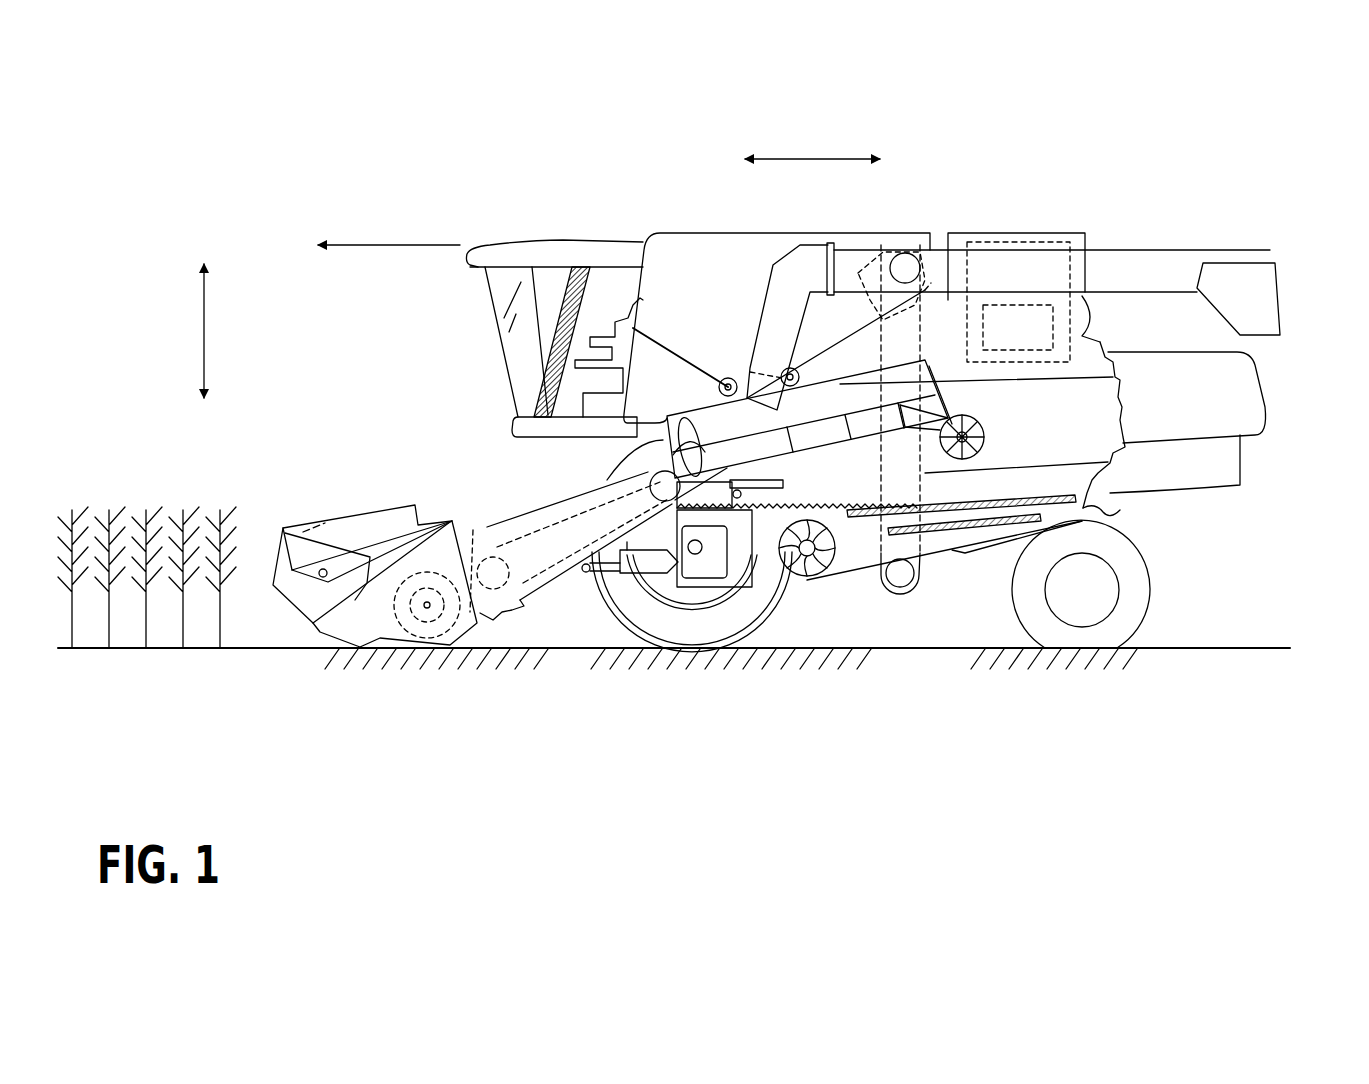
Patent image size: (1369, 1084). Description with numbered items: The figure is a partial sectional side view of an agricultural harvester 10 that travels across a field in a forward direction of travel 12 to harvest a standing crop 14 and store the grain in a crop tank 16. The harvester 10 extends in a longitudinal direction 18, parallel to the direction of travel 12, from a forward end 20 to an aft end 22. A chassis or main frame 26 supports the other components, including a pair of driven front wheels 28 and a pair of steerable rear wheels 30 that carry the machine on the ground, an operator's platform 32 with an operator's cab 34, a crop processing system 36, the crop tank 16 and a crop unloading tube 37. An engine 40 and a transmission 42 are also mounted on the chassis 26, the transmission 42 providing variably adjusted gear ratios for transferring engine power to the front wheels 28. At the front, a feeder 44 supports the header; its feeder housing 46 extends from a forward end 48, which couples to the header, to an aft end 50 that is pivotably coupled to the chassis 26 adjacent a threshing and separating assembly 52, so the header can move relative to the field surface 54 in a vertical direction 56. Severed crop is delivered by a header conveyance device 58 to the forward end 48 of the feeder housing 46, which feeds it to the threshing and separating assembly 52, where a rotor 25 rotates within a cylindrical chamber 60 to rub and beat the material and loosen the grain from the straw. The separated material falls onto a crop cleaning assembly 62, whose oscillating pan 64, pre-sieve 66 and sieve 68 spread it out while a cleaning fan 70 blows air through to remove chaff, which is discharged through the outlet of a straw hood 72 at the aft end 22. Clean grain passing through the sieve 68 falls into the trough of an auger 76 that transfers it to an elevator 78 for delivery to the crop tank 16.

The agricultural harvester 10 is at (520, 190).
The forward direction of travel 12 is at (346, 245).
The standing crop 14 is at (133, 474).
The crop tank 16 is at (722, 233).
The longitudinal direction 18 is at (832, 159).
The forward end 20 is at (358, 423).
The aft end 22 is at (1305, 290).
The rotor 25 is at (690, 422).
The chassis or main frame 26 is at (1110, 512).
The front wheels 28 is at (643, 620).
The rear wheels 30 is at (1140, 593).
The operator's platform 32 is at (525, 430).
The operator's cab 34 is at (512, 337).
The crop processing system 36 is at (1025, 430).
The crop unloading tube 37 is at (1138, 265).
The engine 40 is at (1015, 235).
The transmission 42 is at (1000, 305).
The feeder 44 is at (500, 495).
The feeder housing 46 is at (537, 578).
The forward end of feeder housing 48 is at (440, 557).
The aft end of feeder housing 50 is at (652, 461).
The threshing and separating assembly 52 is at (824, 385).
The field surface 54 is at (1210, 648).
The vertical direction 56 is at (204, 345).
The header conveyance device 58 is at (448, 655).
The cylindrical chamber 60 is at (842, 388).
The crop cleaning assembly 62 is at (864, 585).
The pan 64 is at (808, 505).
The pre-sieve 66 is at (898, 500).
The sieve 68 is at (950, 493).
The cleaning fan 70 is at (803, 585).
The straw hood 72 is at (1260, 402).
The auger 76 is at (900, 582).
The elevator 78 is at (923, 320).